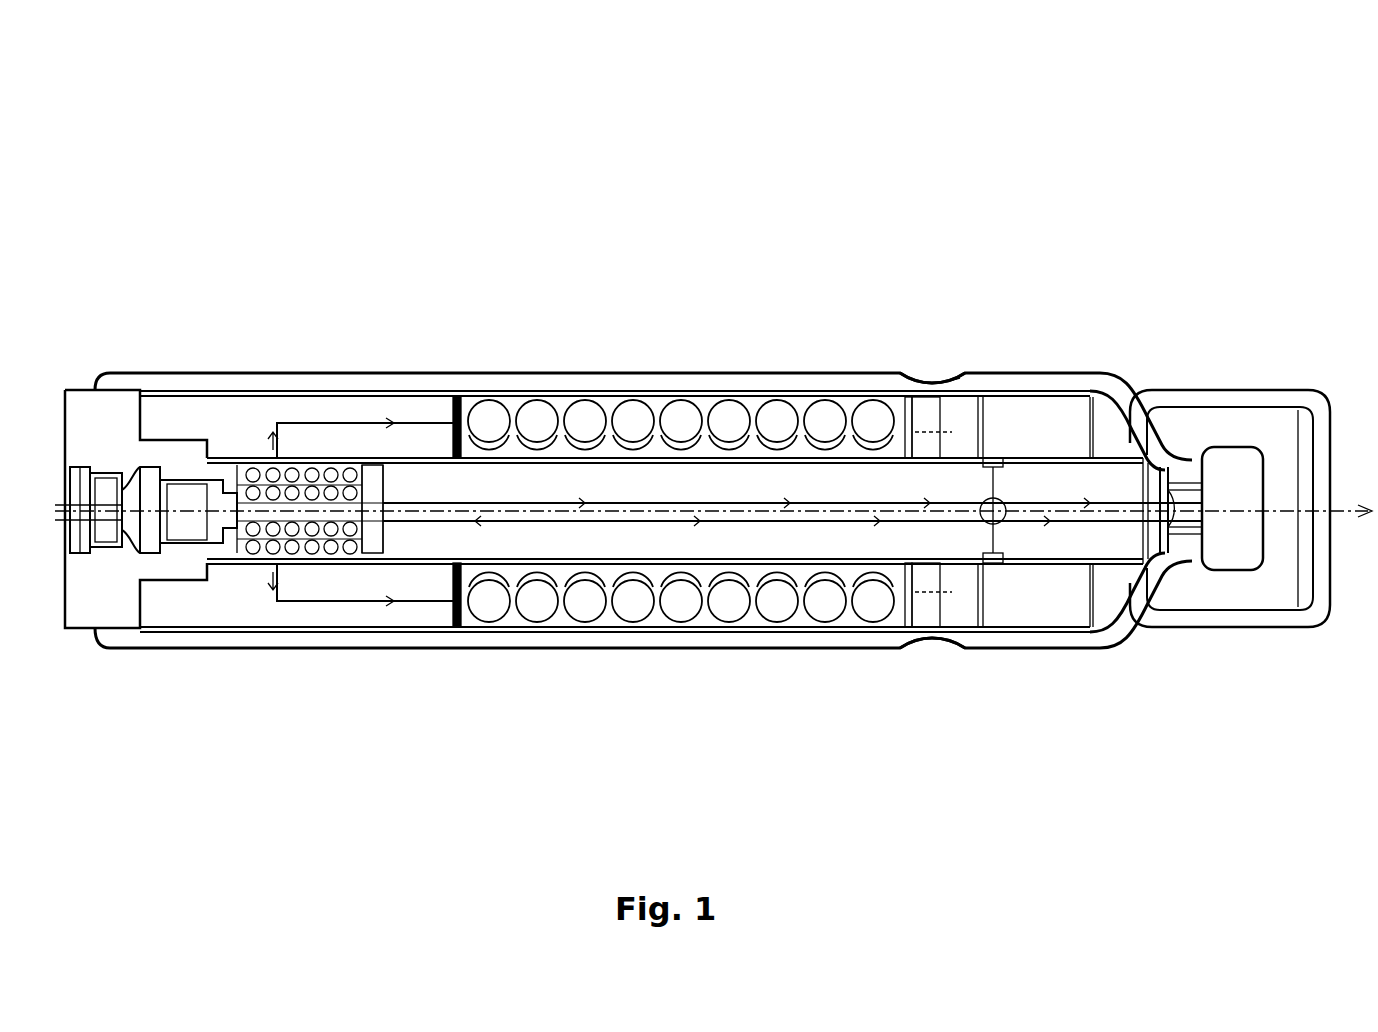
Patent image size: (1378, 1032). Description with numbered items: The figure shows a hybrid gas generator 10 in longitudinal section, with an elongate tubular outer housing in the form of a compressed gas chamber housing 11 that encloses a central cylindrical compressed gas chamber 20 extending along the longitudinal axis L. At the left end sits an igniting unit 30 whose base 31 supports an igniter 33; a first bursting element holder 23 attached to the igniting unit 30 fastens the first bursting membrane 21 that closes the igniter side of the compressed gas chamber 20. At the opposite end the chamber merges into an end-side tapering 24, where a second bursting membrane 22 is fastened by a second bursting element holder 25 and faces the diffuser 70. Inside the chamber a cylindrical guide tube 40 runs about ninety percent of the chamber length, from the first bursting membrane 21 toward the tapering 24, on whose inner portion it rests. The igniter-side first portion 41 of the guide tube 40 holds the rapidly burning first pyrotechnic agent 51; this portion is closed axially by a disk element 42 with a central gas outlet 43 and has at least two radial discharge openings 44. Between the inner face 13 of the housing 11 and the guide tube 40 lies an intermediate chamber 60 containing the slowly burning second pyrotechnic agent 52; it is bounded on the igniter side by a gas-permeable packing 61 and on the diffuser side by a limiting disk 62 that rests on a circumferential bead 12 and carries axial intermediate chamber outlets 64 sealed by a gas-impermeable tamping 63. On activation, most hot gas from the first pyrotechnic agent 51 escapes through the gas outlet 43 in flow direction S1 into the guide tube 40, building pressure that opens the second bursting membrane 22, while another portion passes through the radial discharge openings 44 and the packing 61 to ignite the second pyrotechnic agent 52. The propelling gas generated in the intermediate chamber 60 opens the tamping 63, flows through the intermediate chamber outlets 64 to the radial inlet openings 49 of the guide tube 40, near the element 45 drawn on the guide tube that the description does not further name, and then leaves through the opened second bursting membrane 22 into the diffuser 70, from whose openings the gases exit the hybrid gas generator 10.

The hybrid gas generator 10 is at (906, 124).
The compressed gas chamber housing 11 is at (466, 380).
The bead 12 is at (952, 380).
The inner face 13 is at (658, 400).
The compressed gas chamber 20 is at (790, 400).
The first bursting membrane 21 is at (243, 470).
The second bursting membrane 22 is at (1192, 558).
The first bursting element holder 23 is at (186, 446).
The end-side tapering 24 is at (1155, 430).
The second bursting element holder 25 is at (1193, 558).
The igniting unit 30 is at (75, 668).
The base 31 is at (105, 424).
The igniter 33 is at (127, 552).
The guide tube 40 is at (420, 456).
The first portion 41 is at (315, 470).
The disk element 42 is at (375, 565).
The gas outlet 43 is at (365, 455).
The radial discharge openings 44 is at (278, 470).
The pin 45 is at (1000, 528).
The radial inlet openings 49 is at (995, 452).
The first pyrotechnic agent 51 is at (292, 562).
The second pyrotechnic agent 52 is at (348, 420).
The intermediate chamber 60 is at (508, 615).
The packing 61 is at (455, 630).
The limiting disk 62 is at (912, 380).
The tamping 63 is at (905, 634).
The intermediate chamber outlets 64 is at (935, 430).
The diffuser 70 is at (1283, 425).
The longitudinal axis L is at (1287, 503).
The flow direction S1 is at (478, 500).